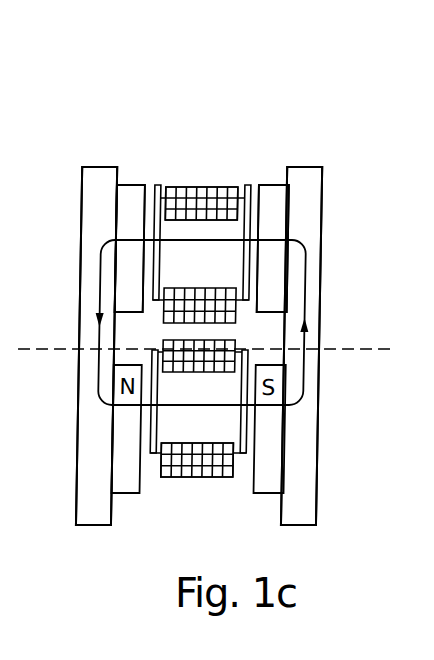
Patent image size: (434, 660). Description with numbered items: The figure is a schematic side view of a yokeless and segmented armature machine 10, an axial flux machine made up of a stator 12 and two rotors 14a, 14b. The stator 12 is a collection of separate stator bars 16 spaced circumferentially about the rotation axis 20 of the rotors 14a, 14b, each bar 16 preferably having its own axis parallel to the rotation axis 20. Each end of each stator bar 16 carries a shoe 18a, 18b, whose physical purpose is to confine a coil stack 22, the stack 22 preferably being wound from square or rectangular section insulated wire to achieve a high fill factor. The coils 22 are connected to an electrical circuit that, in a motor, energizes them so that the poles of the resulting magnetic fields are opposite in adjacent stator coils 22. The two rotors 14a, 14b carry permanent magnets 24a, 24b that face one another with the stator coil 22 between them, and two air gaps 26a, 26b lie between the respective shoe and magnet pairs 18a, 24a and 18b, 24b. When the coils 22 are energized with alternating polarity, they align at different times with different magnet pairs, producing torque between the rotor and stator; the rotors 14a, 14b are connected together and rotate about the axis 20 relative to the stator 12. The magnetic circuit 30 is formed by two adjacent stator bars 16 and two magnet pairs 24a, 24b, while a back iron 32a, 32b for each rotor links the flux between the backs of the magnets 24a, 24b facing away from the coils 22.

The yokeless and segmented armature machine 10 is at (238, 80).
The stator 12 is at (186, 497).
The rotor 14a is at (91, 527).
The rotor 14b is at (298, 528).
The stator bar 16 is at (197, 228).
The shoe 18a is at (149, 203).
The shoe 18b is at (249, 192).
The rotation axis 20 is at (40, 348).
The coil stack 22 is at (172, 188).
The permanent magnet 24a is at (129, 277).
The permanent magnet 24b is at (272, 287).
The air gap 26a is at (142, 185).
The air gap 26b is at (246, 212).
The magnetic circuit 30 is at (308, 370).
The back iron 32a is at (90, 487).
The back iron 32b is at (304, 482).